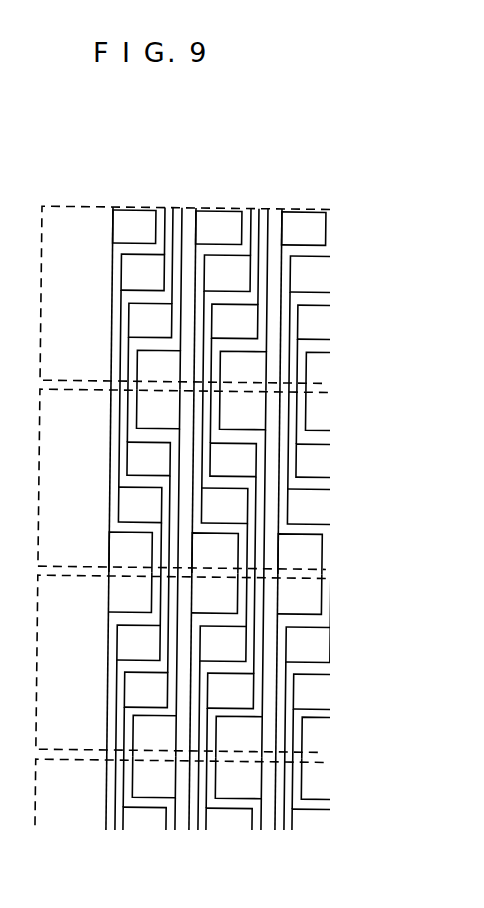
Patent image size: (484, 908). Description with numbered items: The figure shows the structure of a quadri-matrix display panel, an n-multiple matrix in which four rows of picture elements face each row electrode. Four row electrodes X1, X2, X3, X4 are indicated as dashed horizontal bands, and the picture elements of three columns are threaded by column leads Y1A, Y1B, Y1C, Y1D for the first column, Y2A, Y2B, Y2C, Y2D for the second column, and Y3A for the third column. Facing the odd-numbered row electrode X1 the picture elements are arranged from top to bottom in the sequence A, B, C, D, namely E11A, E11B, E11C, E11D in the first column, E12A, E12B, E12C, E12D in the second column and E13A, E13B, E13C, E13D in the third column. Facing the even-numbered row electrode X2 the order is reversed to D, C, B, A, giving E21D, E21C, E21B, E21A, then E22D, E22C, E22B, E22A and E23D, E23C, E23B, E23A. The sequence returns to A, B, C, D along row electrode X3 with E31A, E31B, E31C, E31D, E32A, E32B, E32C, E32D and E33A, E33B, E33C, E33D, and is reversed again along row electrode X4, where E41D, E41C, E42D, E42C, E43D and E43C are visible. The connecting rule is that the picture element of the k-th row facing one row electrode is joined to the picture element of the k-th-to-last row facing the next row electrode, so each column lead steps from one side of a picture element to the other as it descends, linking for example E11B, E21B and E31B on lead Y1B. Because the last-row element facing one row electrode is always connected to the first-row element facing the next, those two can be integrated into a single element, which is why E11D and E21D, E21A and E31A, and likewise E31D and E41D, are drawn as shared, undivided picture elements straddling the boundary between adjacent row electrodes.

The row electrode X1 is at (42, 293).
The row electrode X2 is at (42, 470).
The row electrode X3 is at (42, 650).
The row electrode X4 is at (42, 814).
The column lead Y1A is at (113, 207).
The column lead Y1B is at (165, 207).
The column lead Y1C is at (173, 207).
The column lead Y1D is at (182, 207).
The column lead Y2A is at (196, 207).
The column lead Y2B is at (251, 207).
The column lead Y2C is at (259, 207).
The column lead Y2D is at (268, 207).
The column lead Y3A is at (282, 207).
The picture element E11A is at (134, 227).
The picture element E11B is at (142, 272).
The picture element E11C is at (150, 320).
The picture element E11D is at (158, 369).
The picture element E12A is at (219, 229).
The picture element E12B is at (227, 273).
The picture element E12C is at (235, 321).
The picture element E12D is at (243, 371).
The picture element E13A is at (304, 229).
The picture element E13B is at (312, 274).
The picture element E13C is at (320, 322).
The picture element E13D is at (328, 371).
The picture element E21A is at (130, 552).
The picture element E21B is at (139, 504).
The picture element E21C is at (148, 458).
The picture element E21D is at (157, 408).
The picture element E22A is at (215, 553).
The picture element E22B is at (224, 506).
The picture element E22C is at (233, 460).
The picture element E22D is at (242, 410).
The picture element E23A is at (300, 554).
The picture element E23B is at (309, 506).
The picture element E23C is at (318, 460).
The picture element E23D is at (327, 410).
The picture element E31A is at (129, 592).
The picture element E31B is at (138, 642).
The picture element E31C is at (145, 689).
The picture element E31D is at (154, 735).
The picture element E32A is at (214, 593).
The picture element E32B is at (223, 644).
The picture element E32C is at (230, 691).
The picture element E32D is at (239, 737).
The picture element E33A is at (299, 594).
The picture element E33B is at (308, 644).
The picture element E33C is at (315, 691).
The picture element E33D is at (324, 737).
The picture element E41C is at (144, 824).
The picture element E41D is at (153, 776).
The picture element E42C is at (229, 826).
The picture element E42D is at (238, 778).
The picture element E43C is at (314, 826).
The picture element E43D is at (323, 778).